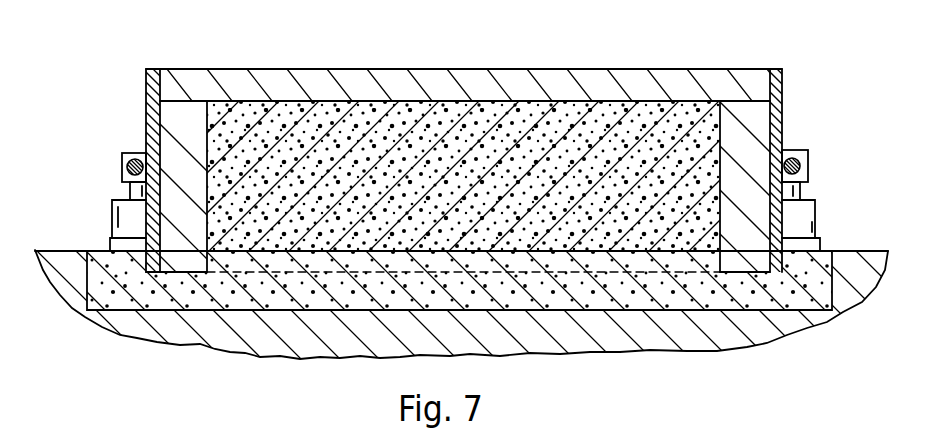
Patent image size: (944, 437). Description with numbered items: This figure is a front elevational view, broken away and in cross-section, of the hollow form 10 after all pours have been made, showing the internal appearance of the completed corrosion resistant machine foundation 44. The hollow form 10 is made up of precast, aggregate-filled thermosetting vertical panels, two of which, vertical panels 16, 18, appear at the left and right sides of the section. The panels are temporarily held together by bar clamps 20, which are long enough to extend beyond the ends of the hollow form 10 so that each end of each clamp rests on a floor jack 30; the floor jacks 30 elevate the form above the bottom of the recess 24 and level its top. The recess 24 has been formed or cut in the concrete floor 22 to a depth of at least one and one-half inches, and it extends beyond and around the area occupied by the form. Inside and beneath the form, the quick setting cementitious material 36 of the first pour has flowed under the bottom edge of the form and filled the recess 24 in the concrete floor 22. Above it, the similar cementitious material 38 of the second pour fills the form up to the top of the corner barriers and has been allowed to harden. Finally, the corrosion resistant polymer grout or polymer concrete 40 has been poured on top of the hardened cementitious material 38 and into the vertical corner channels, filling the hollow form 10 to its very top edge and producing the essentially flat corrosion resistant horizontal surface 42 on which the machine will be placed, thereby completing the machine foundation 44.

The hollow form 10 is at (435, 44).
The vertical panel 16 is at (146, 140).
The vertical panel 18 is at (782, 143).
The bar clamp 20 is at (126, 163).
The concrete floor 22 is at (48, 251).
The recess 24 is at (98, 317).
The floor jack 30 is at (133, 210).
The quick setting cementitious material 36 is at (826, 287).
The cementitious material 38 is at (678, 123).
The corrosion resistant polymer grout or polymer concrete 40 is at (445, 145).
The corrosion resistant horizontal surface 42 is at (633, 69).
The corrosion resistant machine foundation 44 is at (547, 62).